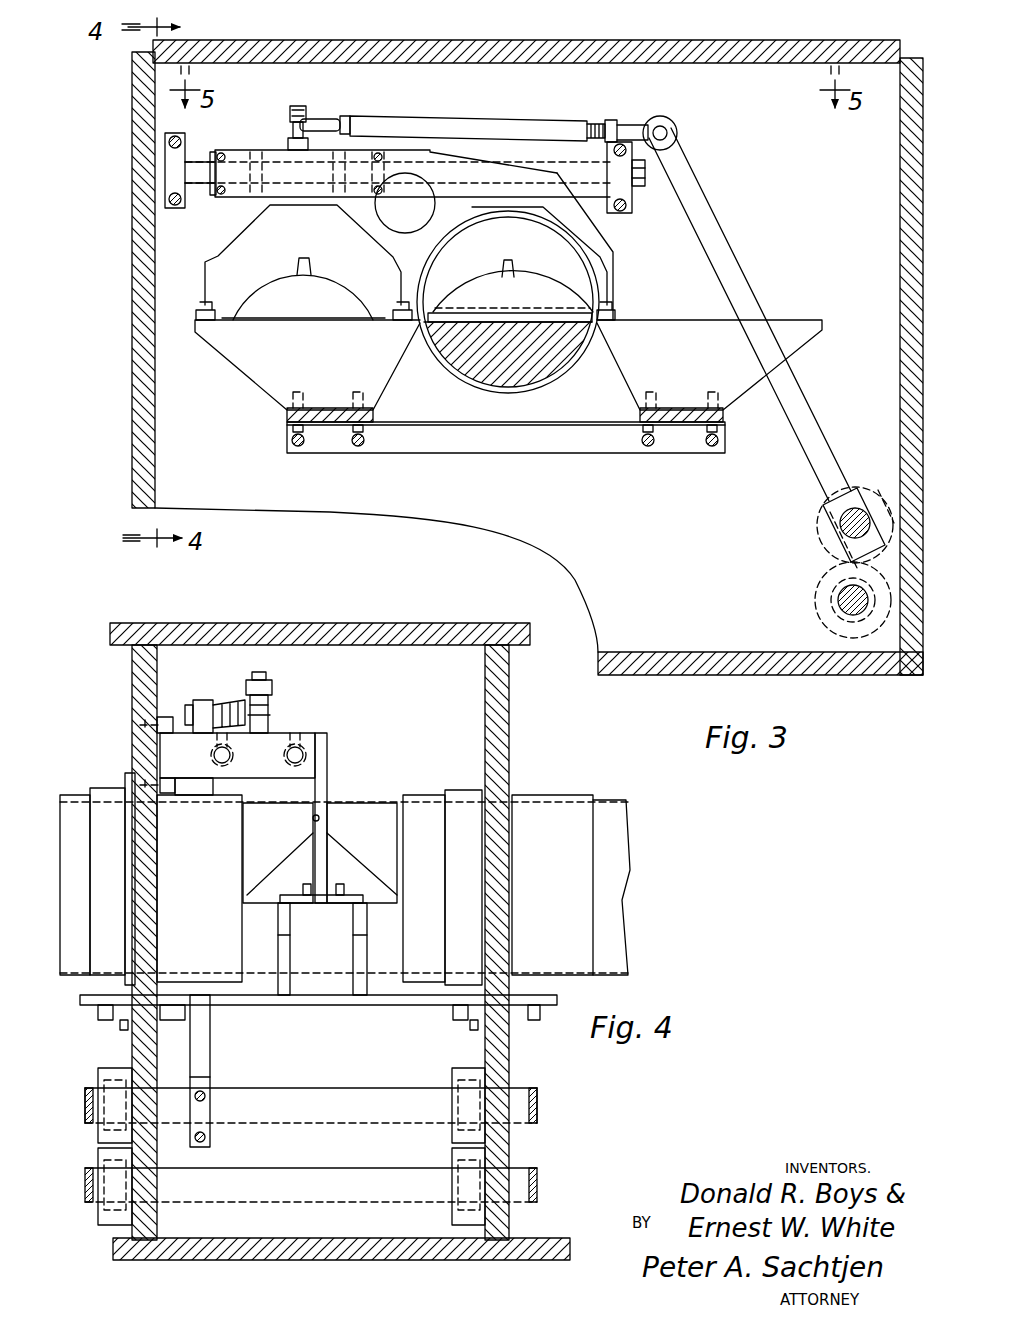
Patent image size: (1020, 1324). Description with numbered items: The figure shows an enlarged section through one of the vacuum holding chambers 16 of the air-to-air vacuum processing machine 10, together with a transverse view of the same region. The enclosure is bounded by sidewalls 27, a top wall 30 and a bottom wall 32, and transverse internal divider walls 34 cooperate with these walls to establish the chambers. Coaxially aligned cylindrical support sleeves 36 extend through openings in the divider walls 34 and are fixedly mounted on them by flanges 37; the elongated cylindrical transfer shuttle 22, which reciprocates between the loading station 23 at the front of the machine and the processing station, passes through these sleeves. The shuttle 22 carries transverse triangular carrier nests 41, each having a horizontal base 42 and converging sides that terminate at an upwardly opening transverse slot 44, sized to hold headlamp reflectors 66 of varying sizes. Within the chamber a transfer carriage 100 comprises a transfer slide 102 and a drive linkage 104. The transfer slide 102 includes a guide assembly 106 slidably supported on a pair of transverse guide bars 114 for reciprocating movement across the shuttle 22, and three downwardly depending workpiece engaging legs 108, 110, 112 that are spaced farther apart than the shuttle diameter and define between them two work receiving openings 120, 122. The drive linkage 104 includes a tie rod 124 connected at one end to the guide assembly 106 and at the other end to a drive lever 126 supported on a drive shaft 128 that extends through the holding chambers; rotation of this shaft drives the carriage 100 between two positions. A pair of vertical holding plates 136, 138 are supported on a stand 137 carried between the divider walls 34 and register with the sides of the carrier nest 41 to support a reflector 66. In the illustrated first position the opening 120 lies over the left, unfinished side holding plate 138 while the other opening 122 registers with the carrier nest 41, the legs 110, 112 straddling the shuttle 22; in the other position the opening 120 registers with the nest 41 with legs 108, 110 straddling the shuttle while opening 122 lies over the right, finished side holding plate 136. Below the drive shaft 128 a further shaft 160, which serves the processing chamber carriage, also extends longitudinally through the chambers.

In FIG. 3, the air-to-air vacuum processing machine 10 is at (128, 446).
In FIG. 4, the vacuum holding chamber 16 is at (333, 652).
In FIG. 3, the transfer shuttle 22 is at (508, 348).
In FIG. 4, the transfer shuttle 22 is at (608, 800).
In FIG. 4, the loading station 23 is at (270, 872).
In FIG. 3, the sidewalls 27 is at (140, 294).
In FIG. 3, the top wall 30 is at (880, 52).
In FIG. 4, the top wall 30 is at (380, 640).
In FIG. 3, the bottom wall 32 is at (858, 665).
In FIG. 4, the bottom wall 32 is at (432, 1250).
In FIG. 3, the transverse internal divider walls 34 is at (172, 397).
In FIG. 4, the transverse internal divider walls 34 is at (148, 667).
In FIG. 3, the cylindrical support sleeves 36 is at (485, 218).
In FIG. 4, the cylindrical support sleeves 36 is at (75, 808).
In FIG. 4, the flanges 37 is at (128, 783).
In FIG. 3, the carrier nest 41 is at (570, 272).
In FIG. 4, the carrier nest 41 is at (320, 841).
In FIG. 4, the horizontal base 42 is at (268, 903).
In FIG. 4, the transverse slot 44 is at (312, 816).
In FIG. 3, the reflector 66 is at (288, 295).
In FIG. 3, the transfer carriage 100 is at (397, 134).
In FIG. 4, the transfer carriage 100 is at (280, 724).
In FIG. 3, the transfer slide 102 is at (226, 146).
In FIG. 4, the transfer slide 102 is at (333, 742).
In FIG. 3, the drive linkage 104 is at (703, 176).
In FIG. 4, the drive linkage 104 is at (206, 698).
In FIG. 3, the guide assembly 106 is at (242, 172).
In FIG. 4, the guide assembly 106 is at (275, 745).
In FIG. 3, the workpiece engaging leg 108 is at (205, 276).
In FIG. 4, the workpiece engaging leg 108 is at (322, 858).
In FIG. 3, the workpiece engaging leg 110 is at (401, 274).
In FIG. 3, the workpiece engaging leg 112 is at (612, 286).
In FIG. 3, the transverse guide bars 114 is at (572, 178).
In FIG. 4, the transverse guide bars 114 is at (285, 760).
In FIG. 3, the work receiving opening 120 is at (242, 252).
In FIG. 3, the work receiving opening 122 is at (545, 243).
In FIG. 3, the tie rod 124 is at (538, 126).
In FIG. 4, the tie rod 124 is at (270, 712).
In FIG. 3, the drive lever 126 is at (720, 236).
In FIG. 4, the drive lever 126 is at (208, 1048).
In FIG. 3, the drive shaft 128 is at (838, 526).
In FIG. 4, the drive shaft 128 is at (333, 1105).
In FIG. 3, the vertical holding plate 136 is at (736, 385).
In FIG. 3, the stand 137 is at (405, 442).
In FIG. 4, the stand 137 is at (385, 1002).
In FIG. 3, the vertical holding plate 138 is at (243, 345).
In FIG. 4, the vertical holding plate 138 is at (360, 930).
In FIG. 3, the shaft 160 is at (836, 602).
In FIG. 4, the shaft 160 is at (335, 1185).